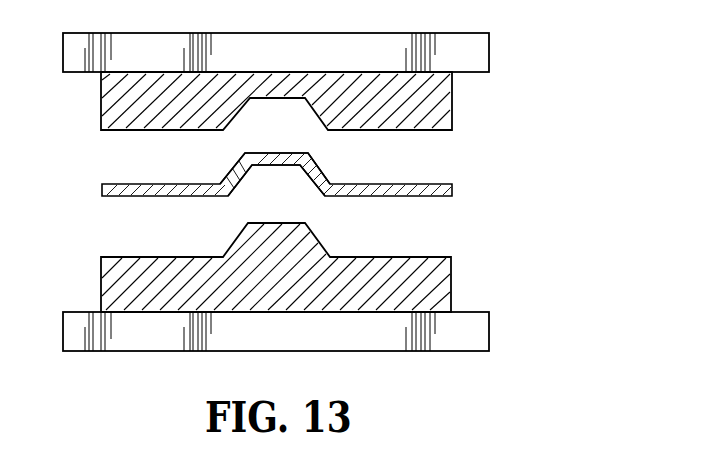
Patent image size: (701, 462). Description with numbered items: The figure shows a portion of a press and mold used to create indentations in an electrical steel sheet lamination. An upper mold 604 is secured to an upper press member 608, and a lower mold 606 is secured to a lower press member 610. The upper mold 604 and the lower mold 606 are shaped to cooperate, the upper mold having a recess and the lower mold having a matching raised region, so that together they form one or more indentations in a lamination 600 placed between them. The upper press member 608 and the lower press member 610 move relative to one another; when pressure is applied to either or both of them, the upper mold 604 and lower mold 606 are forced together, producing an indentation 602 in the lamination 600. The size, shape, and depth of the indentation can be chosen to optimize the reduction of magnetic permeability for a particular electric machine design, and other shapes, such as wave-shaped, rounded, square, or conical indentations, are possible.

The lamination 600 is at (452, 190).
The indentation 602 is at (275, 183).
The upper mold 604 is at (452, 103).
The lower mold 606 is at (452, 285).
The upper press member 608 is at (490, 52).
The lower press member 610 is at (490, 331).